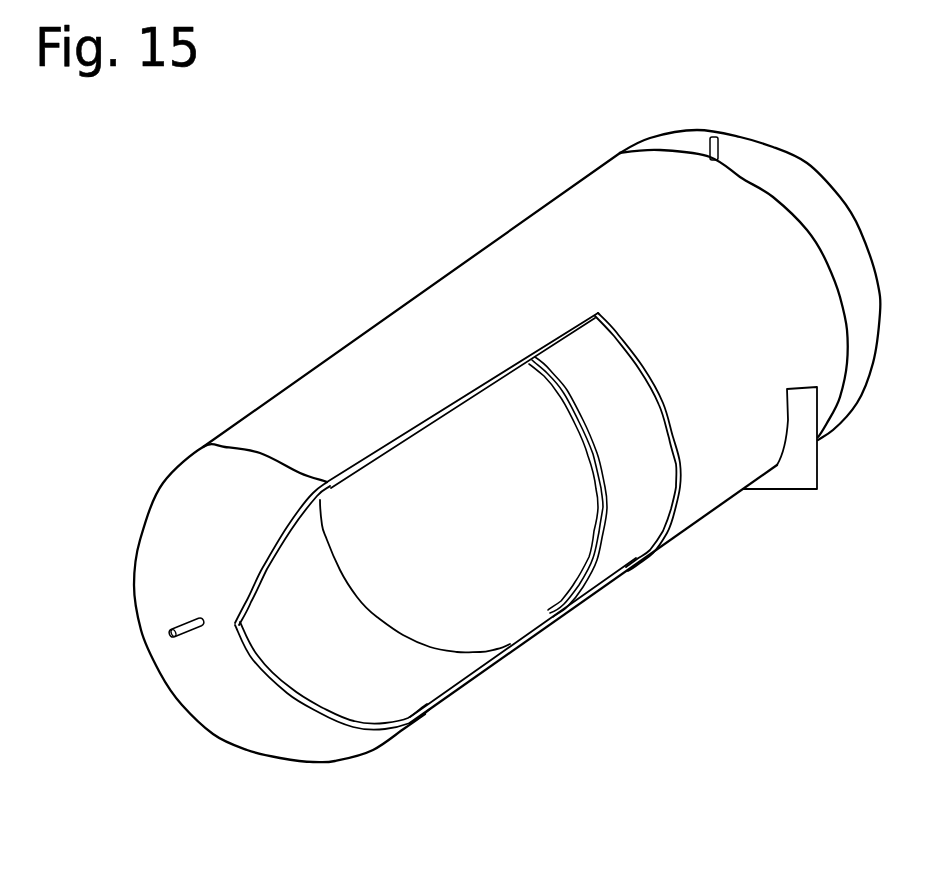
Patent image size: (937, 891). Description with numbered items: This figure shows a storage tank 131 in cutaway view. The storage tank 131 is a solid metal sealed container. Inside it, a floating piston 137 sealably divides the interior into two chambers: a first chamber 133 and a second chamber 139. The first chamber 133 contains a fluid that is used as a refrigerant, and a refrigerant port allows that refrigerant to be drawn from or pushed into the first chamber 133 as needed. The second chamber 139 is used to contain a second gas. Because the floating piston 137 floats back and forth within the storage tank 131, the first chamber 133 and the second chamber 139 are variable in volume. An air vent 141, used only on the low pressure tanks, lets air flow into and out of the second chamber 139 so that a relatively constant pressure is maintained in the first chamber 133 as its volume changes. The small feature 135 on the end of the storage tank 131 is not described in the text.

The cutaway storage tank 131 is at (520, 223).
The first chamber 133 is at (348, 673).
The pin 135 is at (178, 622).
The floating piston 137 is at (587, 533).
The second chamber 139 is at (648, 480).
The air vent 141 is at (718, 150).